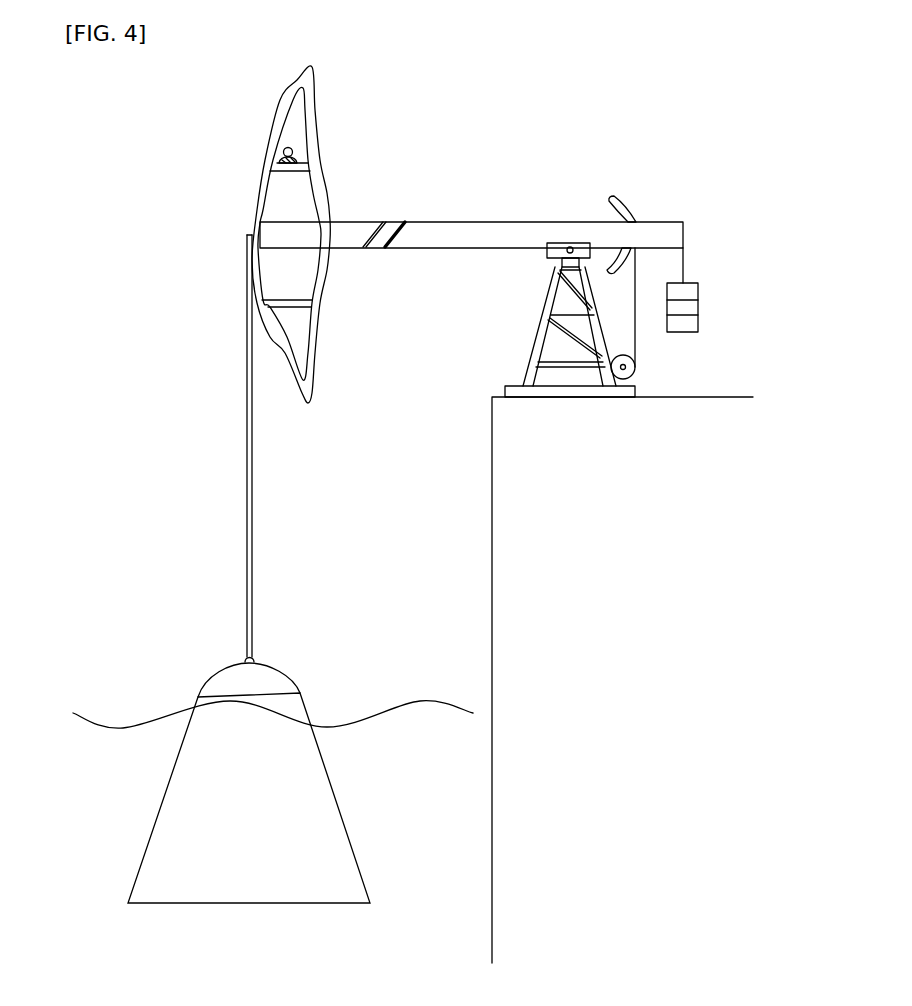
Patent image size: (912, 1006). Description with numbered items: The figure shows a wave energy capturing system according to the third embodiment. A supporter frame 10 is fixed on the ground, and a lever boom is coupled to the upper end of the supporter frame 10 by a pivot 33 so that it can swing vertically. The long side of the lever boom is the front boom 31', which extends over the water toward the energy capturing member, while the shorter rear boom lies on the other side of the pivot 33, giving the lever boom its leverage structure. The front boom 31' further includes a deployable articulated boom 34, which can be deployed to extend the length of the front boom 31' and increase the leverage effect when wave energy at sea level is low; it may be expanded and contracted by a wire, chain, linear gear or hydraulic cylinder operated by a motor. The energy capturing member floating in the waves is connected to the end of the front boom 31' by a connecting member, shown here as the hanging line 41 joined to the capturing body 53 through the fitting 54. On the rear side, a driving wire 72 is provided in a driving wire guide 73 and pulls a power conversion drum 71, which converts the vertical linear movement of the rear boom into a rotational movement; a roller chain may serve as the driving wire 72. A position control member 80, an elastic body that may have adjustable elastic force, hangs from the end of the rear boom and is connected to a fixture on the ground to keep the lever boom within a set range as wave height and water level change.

The supporter frame 10 is at (532, 350).
The front boom 31' is at (471, 206).
The pivot 33 is at (548, 252).
The deployable articulated boom 34 is at (382, 222).
The wire rope 41 is at (253, 503).
The weight body 53 is at (328, 815).
The connecting ring 54 is at (253, 657).
The power conversion drum 71 is at (637, 377).
The driving wire 72 is at (637, 347).
The driving wire guide 73 is at (615, 197).
The position control member 80 is at (699, 292).